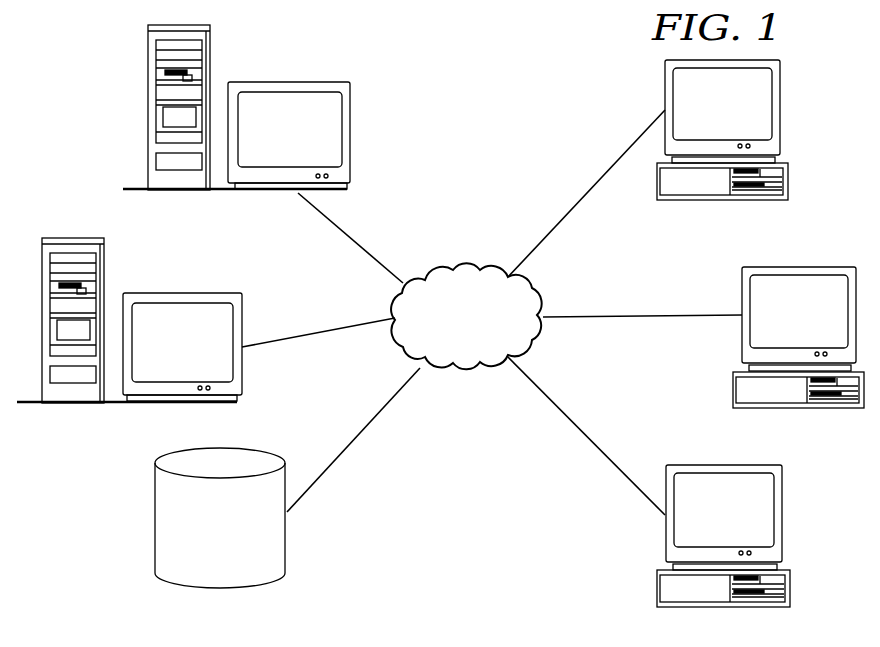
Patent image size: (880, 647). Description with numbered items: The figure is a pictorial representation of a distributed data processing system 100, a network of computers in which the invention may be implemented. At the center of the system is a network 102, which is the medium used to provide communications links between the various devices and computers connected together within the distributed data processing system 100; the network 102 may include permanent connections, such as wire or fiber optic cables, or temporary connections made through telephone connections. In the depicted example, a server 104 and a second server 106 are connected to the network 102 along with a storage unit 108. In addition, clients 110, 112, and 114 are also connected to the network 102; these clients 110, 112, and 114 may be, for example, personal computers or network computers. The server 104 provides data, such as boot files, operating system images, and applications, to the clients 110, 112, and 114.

The distributed data processing system 100 is at (472, 108).
The network 102 is at (448, 344).
The server 104 is at (163, 349).
The server 106 is at (270, 137).
The storage unit 108 is at (200, 559).
The client 110 is at (705, 117).
The client 112 is at (782, 327).
The client 114 is at (705, 525).